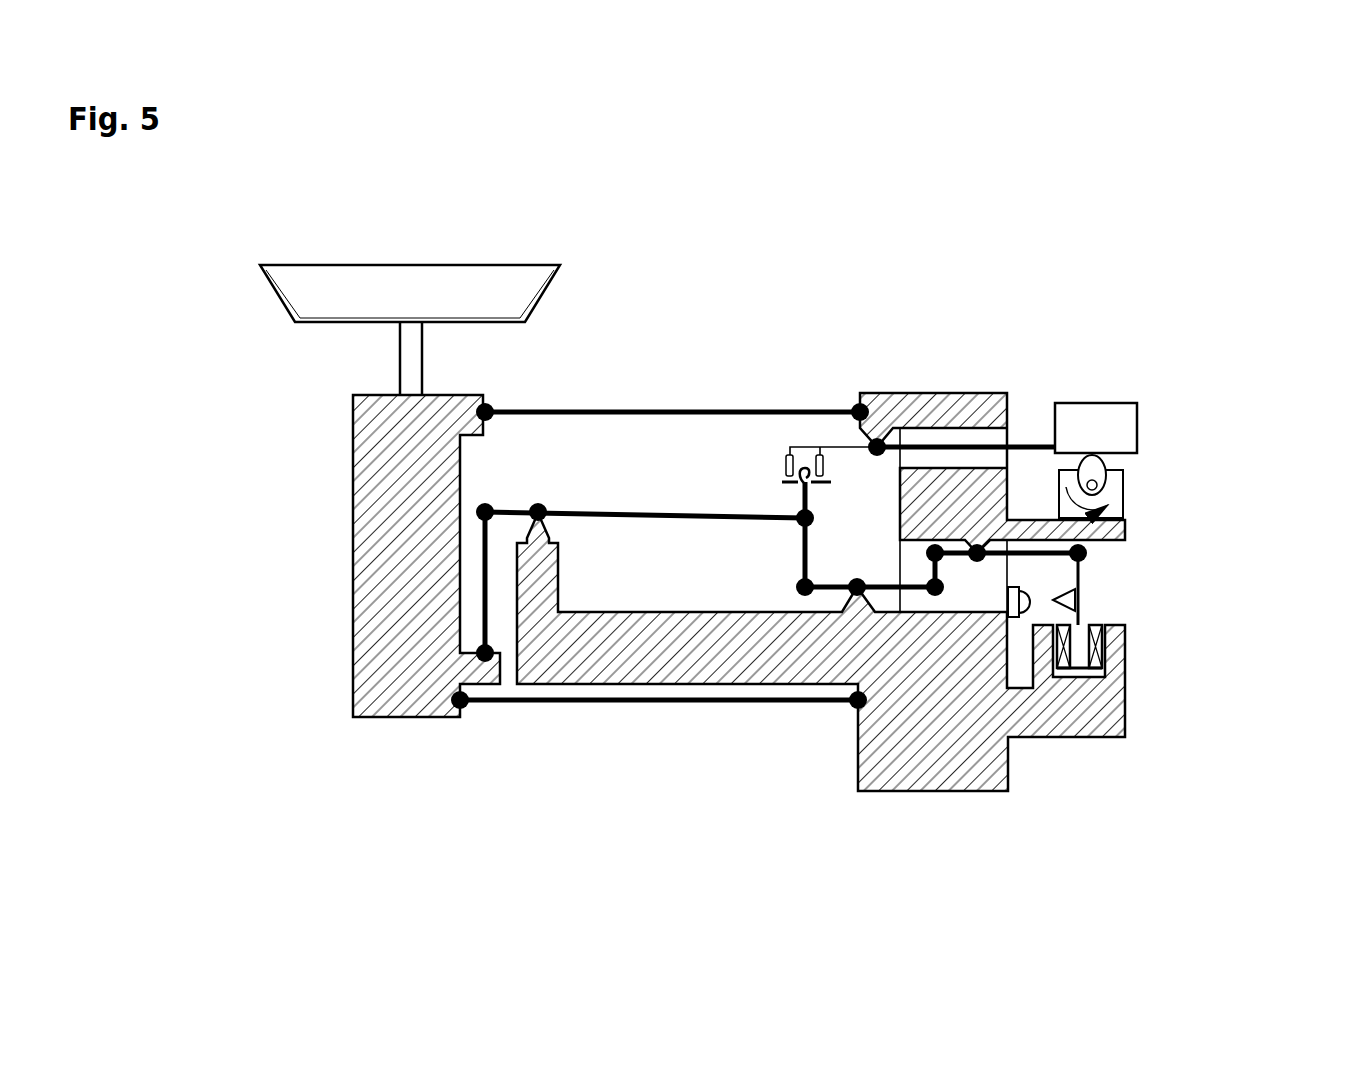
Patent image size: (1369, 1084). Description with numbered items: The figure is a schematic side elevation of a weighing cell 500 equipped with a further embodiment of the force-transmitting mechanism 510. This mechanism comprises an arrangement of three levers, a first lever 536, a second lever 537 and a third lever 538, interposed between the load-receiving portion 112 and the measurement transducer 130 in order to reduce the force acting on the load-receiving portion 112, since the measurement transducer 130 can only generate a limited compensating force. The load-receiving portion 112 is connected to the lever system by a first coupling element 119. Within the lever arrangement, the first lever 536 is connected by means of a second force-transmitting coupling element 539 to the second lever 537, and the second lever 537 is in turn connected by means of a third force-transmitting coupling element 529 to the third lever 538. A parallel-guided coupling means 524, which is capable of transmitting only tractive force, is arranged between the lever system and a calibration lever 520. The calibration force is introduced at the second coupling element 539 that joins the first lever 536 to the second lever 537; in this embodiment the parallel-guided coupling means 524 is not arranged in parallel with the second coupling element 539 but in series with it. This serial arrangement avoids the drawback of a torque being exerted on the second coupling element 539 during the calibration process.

The weighing cell 500 is at (1162, 291).
The load-receiving portion 112 is at (400, 540).
The first coupling element 119 is at (483, 607).
The force-transmitting mechanism 510 is at (705, 472).
The calibration lever 520 is at (1029, 443).
The parallel-guided coupling means 524 is at (780, 484).
The first lever 536 is at (620, 510).
The second lever 537 is at (888, 592).
The third lever 538 is at (960, 551).
The second force-transmitting coupling element 539 is at (803, 548).
The third force-transmitting coupling element 529 is at (940, 569).
The measurement transducer 130 is at (1153, 618).